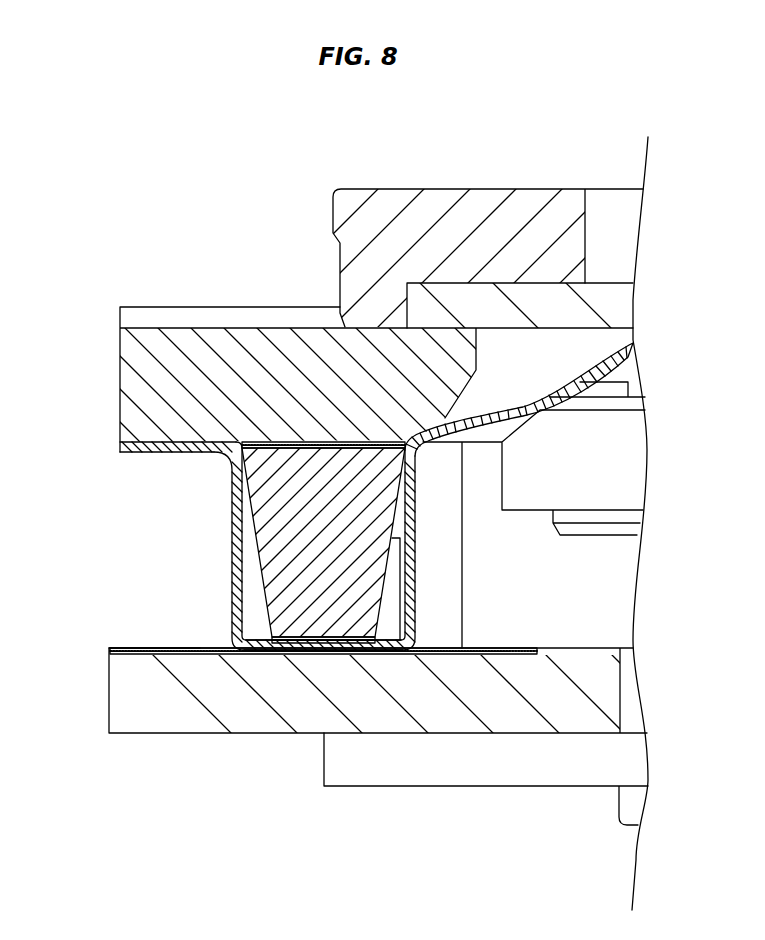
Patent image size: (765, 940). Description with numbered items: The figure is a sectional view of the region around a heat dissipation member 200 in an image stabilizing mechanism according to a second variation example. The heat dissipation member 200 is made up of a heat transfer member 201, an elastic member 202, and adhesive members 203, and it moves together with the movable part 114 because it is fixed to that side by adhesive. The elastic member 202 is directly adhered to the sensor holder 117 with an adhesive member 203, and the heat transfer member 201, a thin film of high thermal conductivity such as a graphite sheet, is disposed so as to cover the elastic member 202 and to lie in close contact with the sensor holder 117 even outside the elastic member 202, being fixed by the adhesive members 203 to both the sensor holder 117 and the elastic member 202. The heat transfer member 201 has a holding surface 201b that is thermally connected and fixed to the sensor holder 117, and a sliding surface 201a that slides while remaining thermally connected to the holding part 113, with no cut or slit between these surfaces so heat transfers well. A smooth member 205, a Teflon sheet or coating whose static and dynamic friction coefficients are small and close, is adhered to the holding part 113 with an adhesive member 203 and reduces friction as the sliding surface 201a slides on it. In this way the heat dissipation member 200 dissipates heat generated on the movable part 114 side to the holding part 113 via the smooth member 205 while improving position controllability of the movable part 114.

The holding part 113 is at (132, 697).
The movable part 114 is at (427, 208).
The sensor holder 117 is at (295, 347).
The heat dissipation member 200 is at (193, 506).
The heat transfer member 201 is at (120, 447).
The sliding surface 201a is at (283, 655).
The holding surface 201b is at (167, 438).
The elastic member 202 is at (285, 555).
The adhesive member 203 is at (263, 440).
The smooth member 205 is at (153, 655).